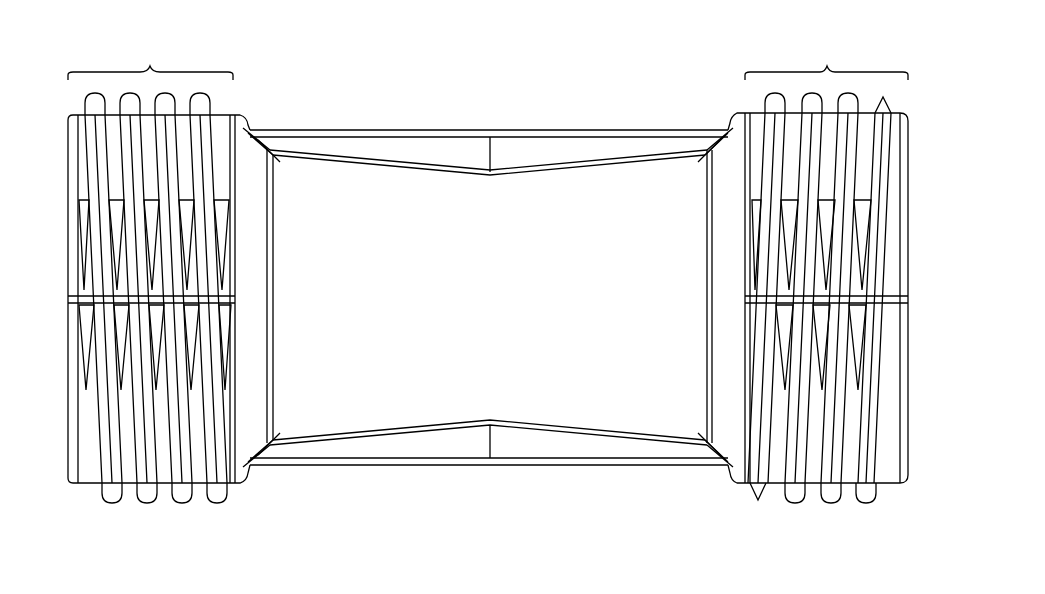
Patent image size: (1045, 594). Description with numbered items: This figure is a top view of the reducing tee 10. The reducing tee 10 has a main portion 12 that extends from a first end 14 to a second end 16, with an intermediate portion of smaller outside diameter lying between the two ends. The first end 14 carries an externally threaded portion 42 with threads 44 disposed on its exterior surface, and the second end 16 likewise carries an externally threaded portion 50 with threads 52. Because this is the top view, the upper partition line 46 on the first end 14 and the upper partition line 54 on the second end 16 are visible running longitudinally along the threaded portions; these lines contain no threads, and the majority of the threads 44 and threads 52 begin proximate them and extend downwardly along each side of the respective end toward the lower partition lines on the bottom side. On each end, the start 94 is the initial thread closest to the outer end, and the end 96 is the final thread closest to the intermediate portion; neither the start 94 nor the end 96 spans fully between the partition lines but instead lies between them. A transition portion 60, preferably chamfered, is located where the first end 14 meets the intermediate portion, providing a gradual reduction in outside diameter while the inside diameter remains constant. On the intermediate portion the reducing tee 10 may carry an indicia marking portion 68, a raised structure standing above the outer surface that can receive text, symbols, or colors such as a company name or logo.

The reducing tee 10 is at (597, 78).
The main portion 12 is at (405, 215).
The first end 14 is at (67, 388).
The second end 16 is at (913, 402).
The externally threaded portion 42 is at (150, 66).
The threads 44 is at (97, 125).
The upper partition line 46 is at (88, 298).
The externally threaded portion 50 is at (827, 66).
The threads 52 is at (852, 177).
The upper partition line 54 is at (885, 300).
The transition portion 60 is at (255, 168).
The indicia marking portion 68 is at (463, 152).
The start 94 is at (888, 102).
The end 96 is at (722, 427).